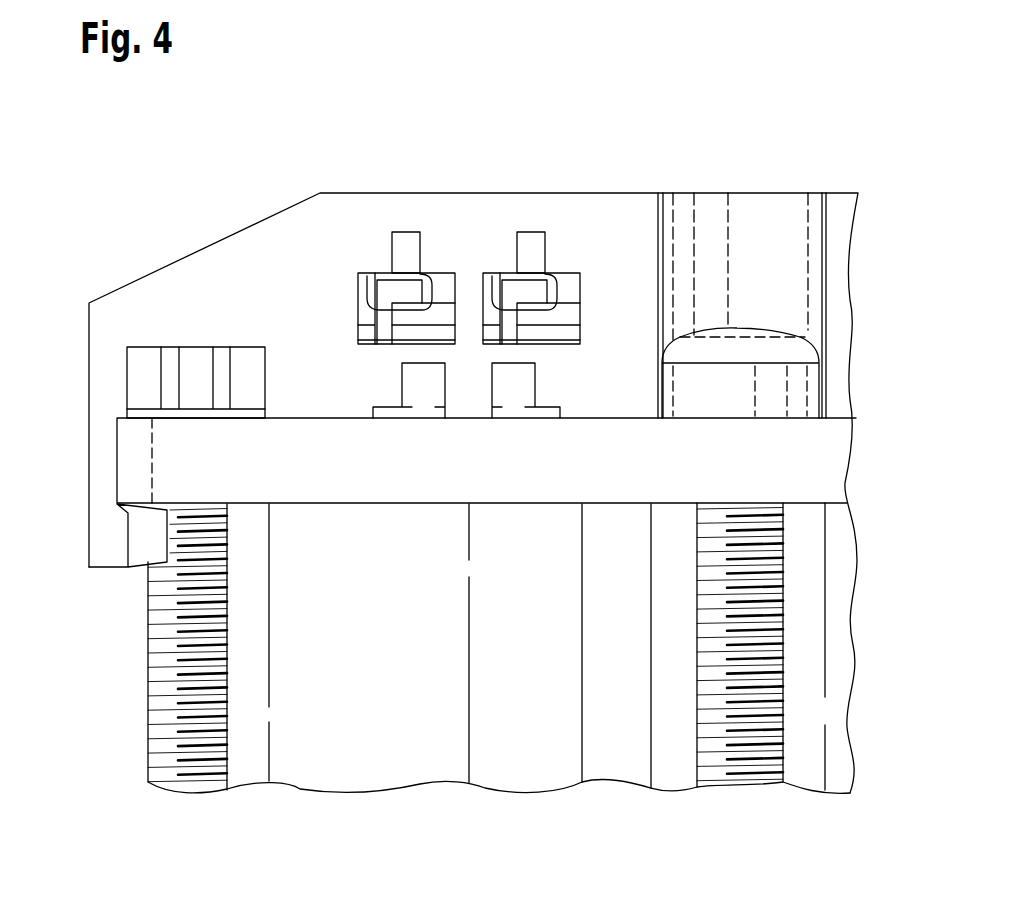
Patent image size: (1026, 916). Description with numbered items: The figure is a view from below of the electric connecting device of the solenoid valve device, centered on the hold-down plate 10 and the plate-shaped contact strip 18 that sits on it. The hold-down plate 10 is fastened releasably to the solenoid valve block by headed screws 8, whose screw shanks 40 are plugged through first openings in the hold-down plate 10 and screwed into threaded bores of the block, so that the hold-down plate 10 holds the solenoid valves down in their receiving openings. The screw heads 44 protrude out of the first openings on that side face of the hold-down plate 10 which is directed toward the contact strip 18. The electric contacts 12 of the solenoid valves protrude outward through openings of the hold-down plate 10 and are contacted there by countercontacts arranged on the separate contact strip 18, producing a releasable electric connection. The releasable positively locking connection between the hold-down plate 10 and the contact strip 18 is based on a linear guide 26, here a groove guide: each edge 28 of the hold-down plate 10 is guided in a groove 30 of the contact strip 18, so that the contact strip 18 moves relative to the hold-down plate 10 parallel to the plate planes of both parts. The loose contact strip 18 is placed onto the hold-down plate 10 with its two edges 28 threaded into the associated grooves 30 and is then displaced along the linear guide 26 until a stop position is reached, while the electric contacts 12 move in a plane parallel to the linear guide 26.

The headed screw 8 is at (747, 742).
The hold-down plate 10 is at (805, 466).
The electric contact 12 is at (408, 290).
The contact strip 18 is at (627, 230).
The linear guide 26 is at (165, 346).
The edge 28 is at (132, 455).
The groove 30 is at (127, 508).
The screw shank 40 is at (750, 637).
The screw head 44 is at (772, 388).